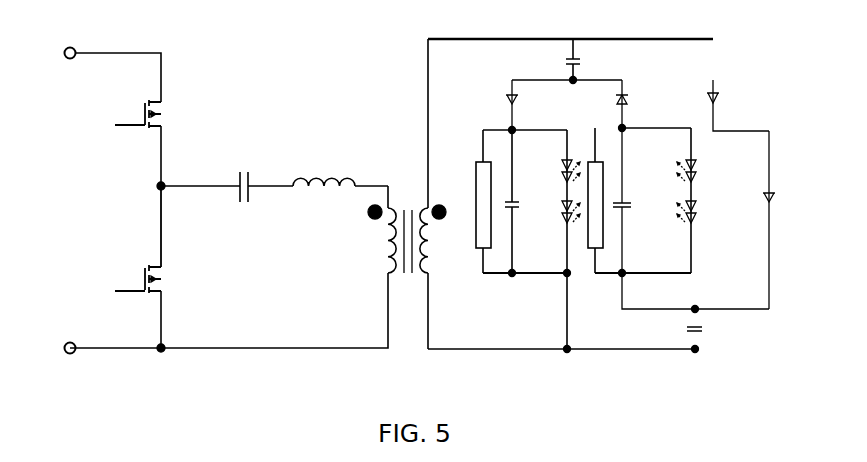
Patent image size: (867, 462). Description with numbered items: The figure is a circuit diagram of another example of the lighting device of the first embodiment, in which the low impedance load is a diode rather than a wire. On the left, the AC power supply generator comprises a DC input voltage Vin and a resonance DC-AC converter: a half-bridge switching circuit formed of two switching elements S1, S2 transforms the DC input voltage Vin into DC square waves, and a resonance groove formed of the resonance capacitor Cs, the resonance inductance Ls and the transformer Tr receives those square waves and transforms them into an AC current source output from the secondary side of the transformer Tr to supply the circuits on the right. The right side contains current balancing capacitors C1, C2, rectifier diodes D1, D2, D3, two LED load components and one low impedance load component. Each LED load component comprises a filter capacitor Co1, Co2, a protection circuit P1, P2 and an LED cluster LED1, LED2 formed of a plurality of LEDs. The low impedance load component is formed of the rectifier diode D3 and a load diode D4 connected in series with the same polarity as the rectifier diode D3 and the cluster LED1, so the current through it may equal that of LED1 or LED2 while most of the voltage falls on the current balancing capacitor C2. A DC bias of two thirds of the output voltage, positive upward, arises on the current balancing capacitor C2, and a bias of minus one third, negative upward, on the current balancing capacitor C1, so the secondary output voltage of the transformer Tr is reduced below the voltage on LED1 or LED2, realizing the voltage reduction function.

The DC input voltage Vin is at (105, 201).
The switching element S1 is at (153, 143).
The switching element S2 is at (153, 267).
The resonance capacitor Cs is at (227, 175).
The resonance inductance Ls is at (340, 167).
The transformer Tr is at (303, 194).
The current balancing capacitor C1 is at (589, 61).
The current balancing capacitor C2 is at (706, 335).
The rectifier diode D1 is at (531, 107).
The rectifier diode D2 is at (637, 106).
The rectifier diode D3 is at (738, 105).
The load diode D4 is at (786, 220).
The filter capacitor Co1 is at (527, 203).
The filter capacitor Co2 is at (637, 202).
The LED cluster LED1 is at (549, 239).
The LED cluster LED2 is at (671, 200).
The protection circuit P1 is at (474, 218).
The protection circuit P2 is at (585, 238).